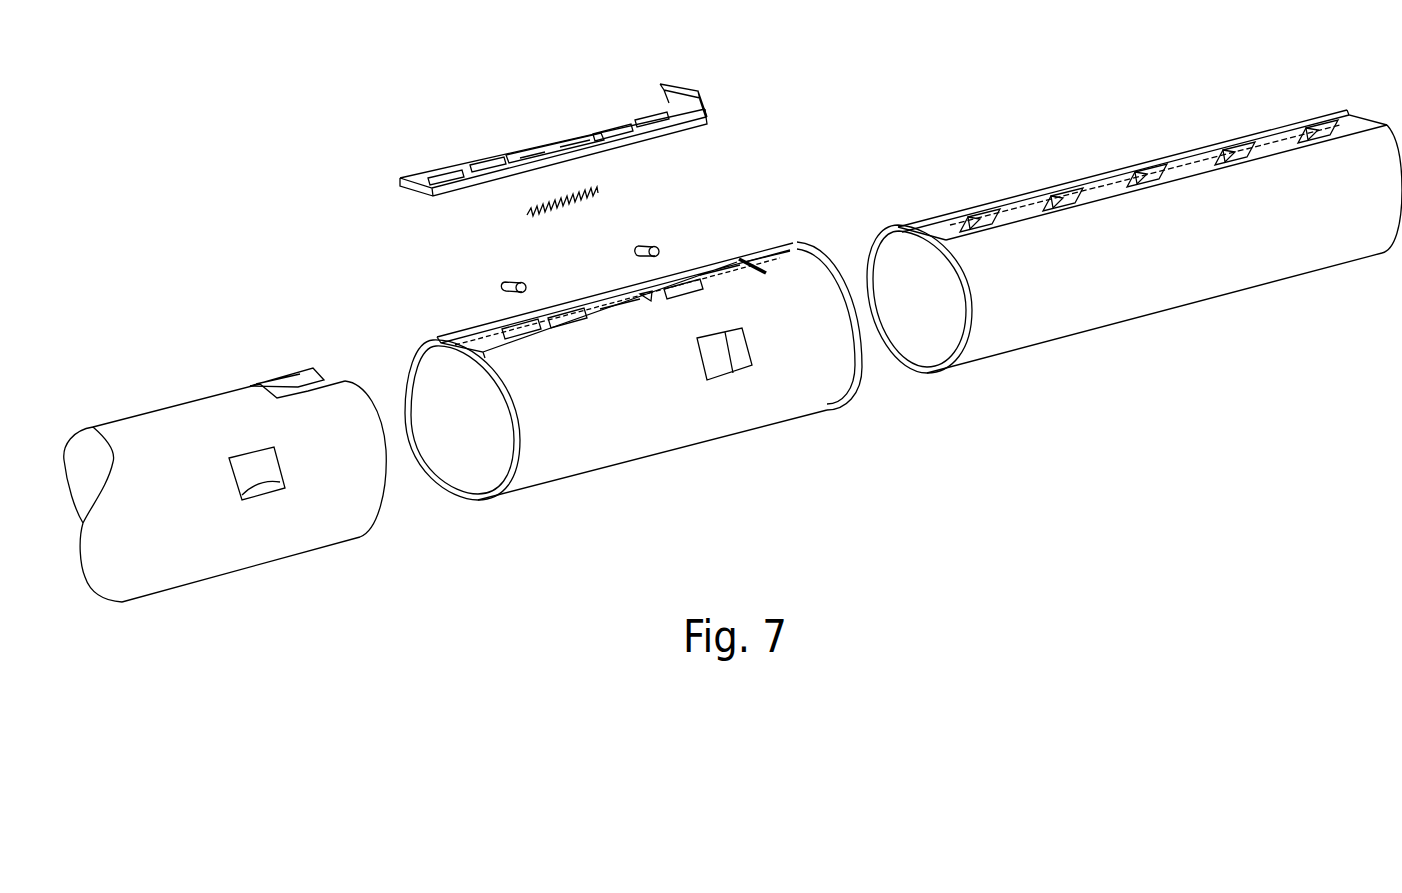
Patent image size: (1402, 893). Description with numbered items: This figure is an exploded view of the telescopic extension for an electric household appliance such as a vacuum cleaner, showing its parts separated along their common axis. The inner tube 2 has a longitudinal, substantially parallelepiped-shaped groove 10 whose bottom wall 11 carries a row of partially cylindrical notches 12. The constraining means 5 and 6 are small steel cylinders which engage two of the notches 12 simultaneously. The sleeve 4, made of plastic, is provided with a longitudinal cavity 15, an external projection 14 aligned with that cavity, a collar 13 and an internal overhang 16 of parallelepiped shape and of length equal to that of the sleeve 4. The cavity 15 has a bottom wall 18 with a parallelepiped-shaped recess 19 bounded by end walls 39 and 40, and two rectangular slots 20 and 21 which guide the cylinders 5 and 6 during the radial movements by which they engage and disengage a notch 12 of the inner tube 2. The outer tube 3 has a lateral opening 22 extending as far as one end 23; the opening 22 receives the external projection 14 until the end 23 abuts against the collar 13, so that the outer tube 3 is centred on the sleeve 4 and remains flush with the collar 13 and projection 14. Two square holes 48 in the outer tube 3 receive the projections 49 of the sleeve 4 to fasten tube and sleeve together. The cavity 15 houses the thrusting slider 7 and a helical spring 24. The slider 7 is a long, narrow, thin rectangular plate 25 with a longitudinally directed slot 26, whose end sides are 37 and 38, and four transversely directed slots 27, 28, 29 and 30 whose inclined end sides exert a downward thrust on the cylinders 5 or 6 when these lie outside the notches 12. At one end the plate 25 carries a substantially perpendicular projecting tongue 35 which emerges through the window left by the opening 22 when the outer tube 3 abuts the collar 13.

The inner tube 2 is at (1134, 221).
The outer tube 3 is at (262, 473).
The sleeve 4 is at (633, 355).
The constraining means 5 is at (520, 283).
The constraining means 6 is at (657, 251).
The thrusting slider 7 is at (578, 104).
The groove 10 is at (1098, 178).
The bottom wall 11 is at (1190, 162).
The notches 12 is at (970, 218).
The collar 13 is at (833, 275).
The external projection 14 is at (766, 256).
The longitudinal cavity 15 is at (727, 270).
The internal overhang 16 is at (466, 360).
The bottom wall 18 is at (767, 272).
The recess 19 is at (646, 300).
The rectangular slot 20 is at (528, 335).
The rectangular slot 21 is at (688, 290).
The lateral opening 22 is at (302, 382).
The end 23 is at (395, 485).
The helical spring 24 is at (573, 202).
The rectangular plate 25 is at (603, 151).
The slot 26 is at (550, 150).
The slot 27 is at (437, 176).
The slot 28 is at (484, 165).
The slot 29 is at (604, 133).
The slot 30 is at (652, 120).
The projecting tongue 35 is at (685, 85).
The end side 37 is at (521, 157).
The end side 38 is at (575, 139).
The end wall 39 is at (578, 313).
The end wall 40 is at (670, 300).
The square holes 48 is at (277, 488).
The projections 49 is at (740, 355).